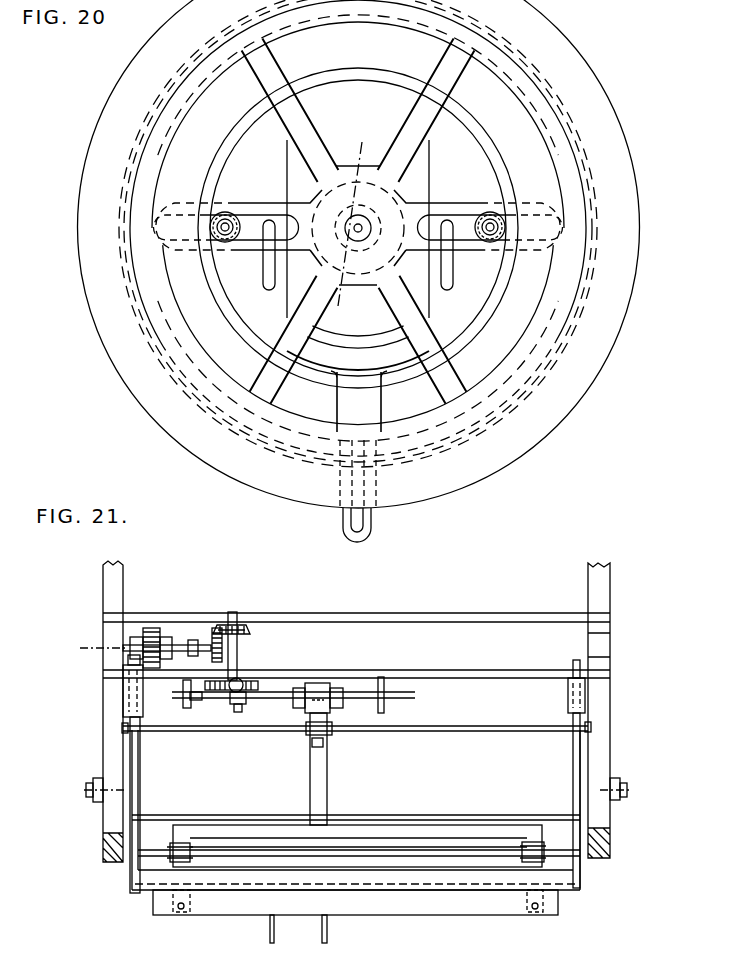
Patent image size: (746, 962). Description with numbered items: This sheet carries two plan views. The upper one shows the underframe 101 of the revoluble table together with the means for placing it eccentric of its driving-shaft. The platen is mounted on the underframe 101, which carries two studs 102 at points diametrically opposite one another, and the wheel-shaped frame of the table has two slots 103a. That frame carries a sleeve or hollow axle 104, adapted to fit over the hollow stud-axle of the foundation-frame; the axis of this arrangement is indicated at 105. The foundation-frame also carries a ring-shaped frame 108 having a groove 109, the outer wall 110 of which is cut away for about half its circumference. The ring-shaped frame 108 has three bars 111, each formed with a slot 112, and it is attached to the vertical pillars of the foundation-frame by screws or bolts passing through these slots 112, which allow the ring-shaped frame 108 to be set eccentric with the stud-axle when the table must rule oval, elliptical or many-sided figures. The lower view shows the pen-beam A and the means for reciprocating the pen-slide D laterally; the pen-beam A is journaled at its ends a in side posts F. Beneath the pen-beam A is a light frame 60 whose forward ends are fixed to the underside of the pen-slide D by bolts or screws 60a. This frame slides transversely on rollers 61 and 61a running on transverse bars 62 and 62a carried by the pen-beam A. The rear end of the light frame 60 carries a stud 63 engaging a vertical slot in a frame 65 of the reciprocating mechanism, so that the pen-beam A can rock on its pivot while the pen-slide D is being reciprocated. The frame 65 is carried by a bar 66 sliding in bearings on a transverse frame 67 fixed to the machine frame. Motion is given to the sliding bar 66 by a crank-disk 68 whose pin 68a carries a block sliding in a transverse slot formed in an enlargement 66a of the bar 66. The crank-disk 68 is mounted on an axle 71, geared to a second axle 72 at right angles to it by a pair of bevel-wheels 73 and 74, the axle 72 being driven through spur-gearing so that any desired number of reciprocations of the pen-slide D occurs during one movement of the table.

In FIG. 20, the underframe 101 is at (628, 262).
In FIG. 20, the studs 102 is at (212, 246).
In FIG. 20, the slots 103a is at (450, 188).
In FIG. 20, the sleeve or hollow axle 104 is at (356, 292).
In FIG. 20, the axis 105 is at (361, 217).
In FIG. 20, the ring-shaped frame 108 is at (380, 350).
In FIG. 20, the groove 109 is at (277, 278).
In FIG. 20, the outer wall 110 is at (272, 322).
In FIG. 20, the bars 111 is at (300, 272).
In FIG. 20, the slot 112 is at (264, 264).
In FIG. 21, the light frame 60 is at (340, 782).
In FIG. 21, the bolts or screws 60a is at (532, 918).
In FIG. 21, the rollers 61 is at (176, 846).
In FIG. 21, the rollers 61a is at (312, 744).
In FIG. 21, the transverse bar 62 is at (388, 848).
In FIG. 21, the transverse bar 62a is at (438, 730).
In FIG. 21, the stud 63 is at (334, 724).
In FIG. 21, the frame 65 is at (322, 690).
In FIG. 21, the sliding bar 66 is at (418, 696).
In FIG. 21, the enlargement 66a is at (208, 702).
In FIG. 21, the transverse frame 67 is at (450, 672).
In FIG. 21, the crank-disk 68 is at (255, 680).
In FIG. 21, the pin 68a is at (236, 712).
In FIG. 21, the axle 71 is at (240, 650).
In FIG. 21, the axle 72 is at (100, 647).
In FIG. 21, the bevel-wheel 73 is at (246, 622).
In FIG. 21, the bevel-wheel 74 is at (212, 630).
In FIG. 21, the frame post F is at (108, 732).
In FIG. 21, the pen-beam A is at (140, 800).
In FIG. 21, the axle journal a is at (84, 792).
In FIG. 21, the pen-slide D is at (213, 920).